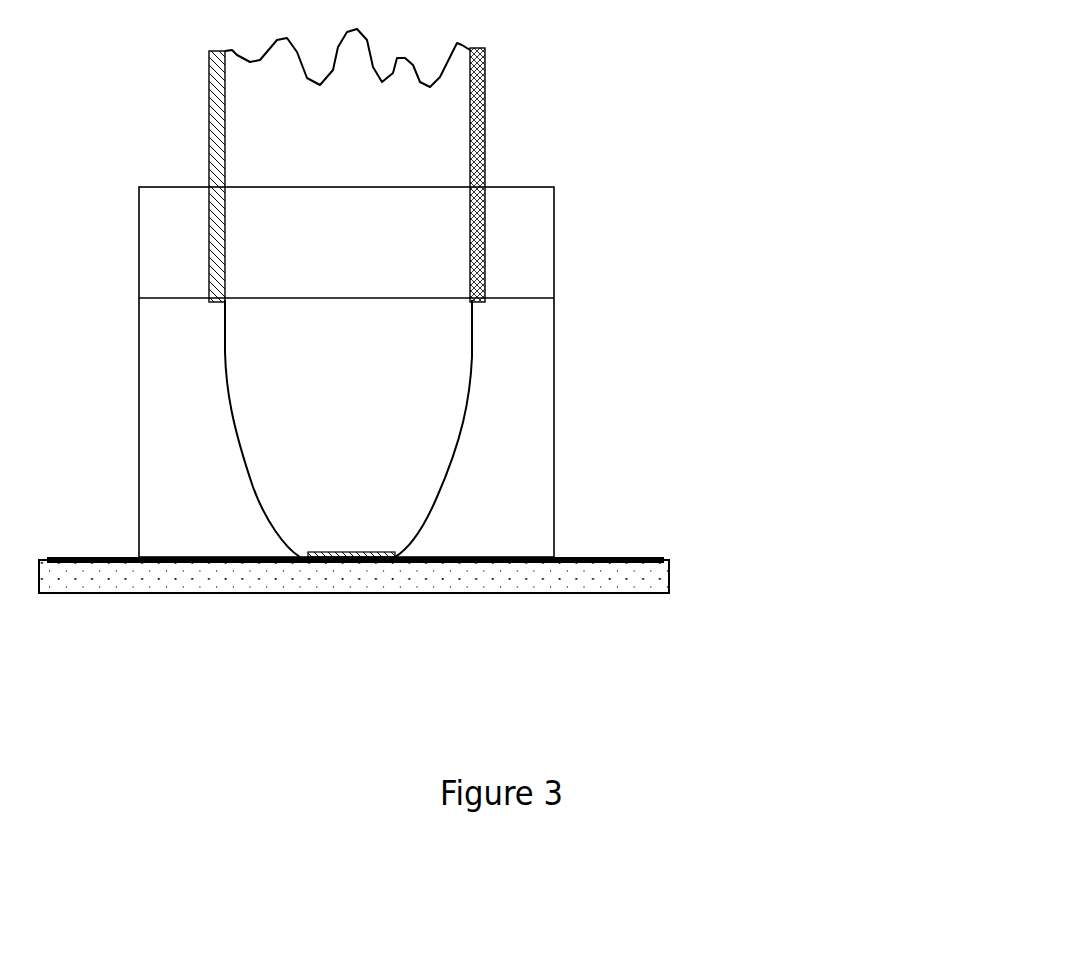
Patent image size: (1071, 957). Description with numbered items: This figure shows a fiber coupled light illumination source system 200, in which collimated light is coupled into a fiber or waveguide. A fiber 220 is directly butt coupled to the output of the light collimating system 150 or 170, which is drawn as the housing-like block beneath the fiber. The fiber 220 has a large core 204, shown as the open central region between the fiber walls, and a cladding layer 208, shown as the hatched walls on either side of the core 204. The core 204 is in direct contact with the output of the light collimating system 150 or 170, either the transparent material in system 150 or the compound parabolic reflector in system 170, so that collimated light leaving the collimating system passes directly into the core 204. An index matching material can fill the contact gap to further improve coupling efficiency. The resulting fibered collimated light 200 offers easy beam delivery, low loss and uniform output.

The fiber coupled light illumination source system 200 is at (717, 103).
The fiber 220 is at (485, 93).
The cladding layer 208 is at (485, 132).
The core 204 is at (445, 177).
The light collimating system 150 is at (540, 427).
The light collimating system 170 is at (477, 372).